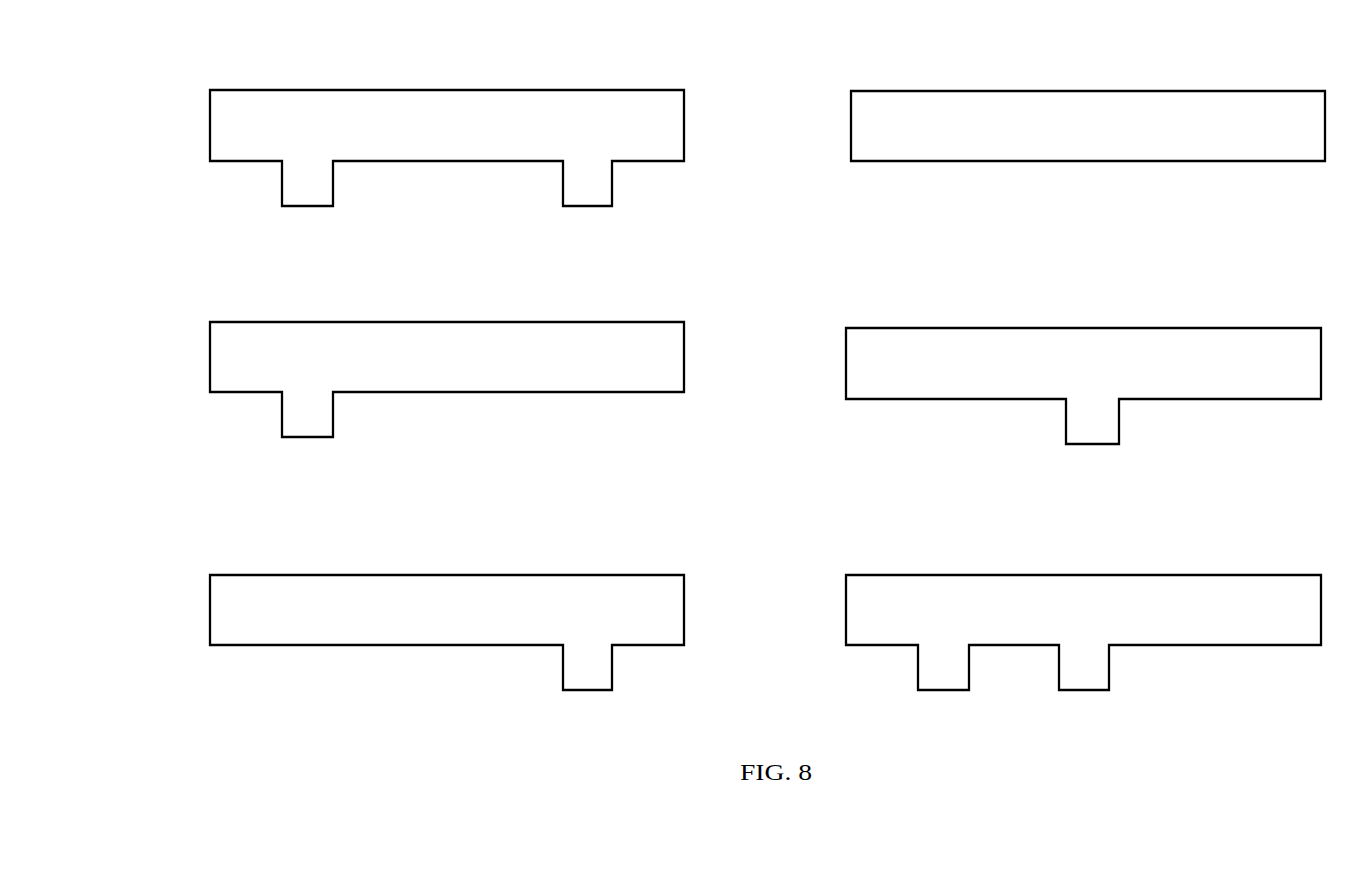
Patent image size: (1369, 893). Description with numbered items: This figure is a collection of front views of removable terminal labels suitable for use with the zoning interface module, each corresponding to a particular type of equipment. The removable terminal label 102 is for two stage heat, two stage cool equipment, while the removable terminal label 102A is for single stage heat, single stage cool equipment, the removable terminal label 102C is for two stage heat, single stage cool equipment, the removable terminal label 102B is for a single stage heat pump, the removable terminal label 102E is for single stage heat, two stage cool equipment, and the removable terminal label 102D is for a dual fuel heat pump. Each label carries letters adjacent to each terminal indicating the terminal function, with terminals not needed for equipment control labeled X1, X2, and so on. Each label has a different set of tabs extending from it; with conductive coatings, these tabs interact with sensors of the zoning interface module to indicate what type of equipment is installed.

The removable terminal label 102 is at (685, 132).
The removable terminal label 102A is at (850, 135).
The removable terminal label 102B is at (845, 370).
The removable terminal label 102C is at (685, 362).
The removable terminal label 102D is at (845, 612).
The removable terminal label 102E is at (685, 600).